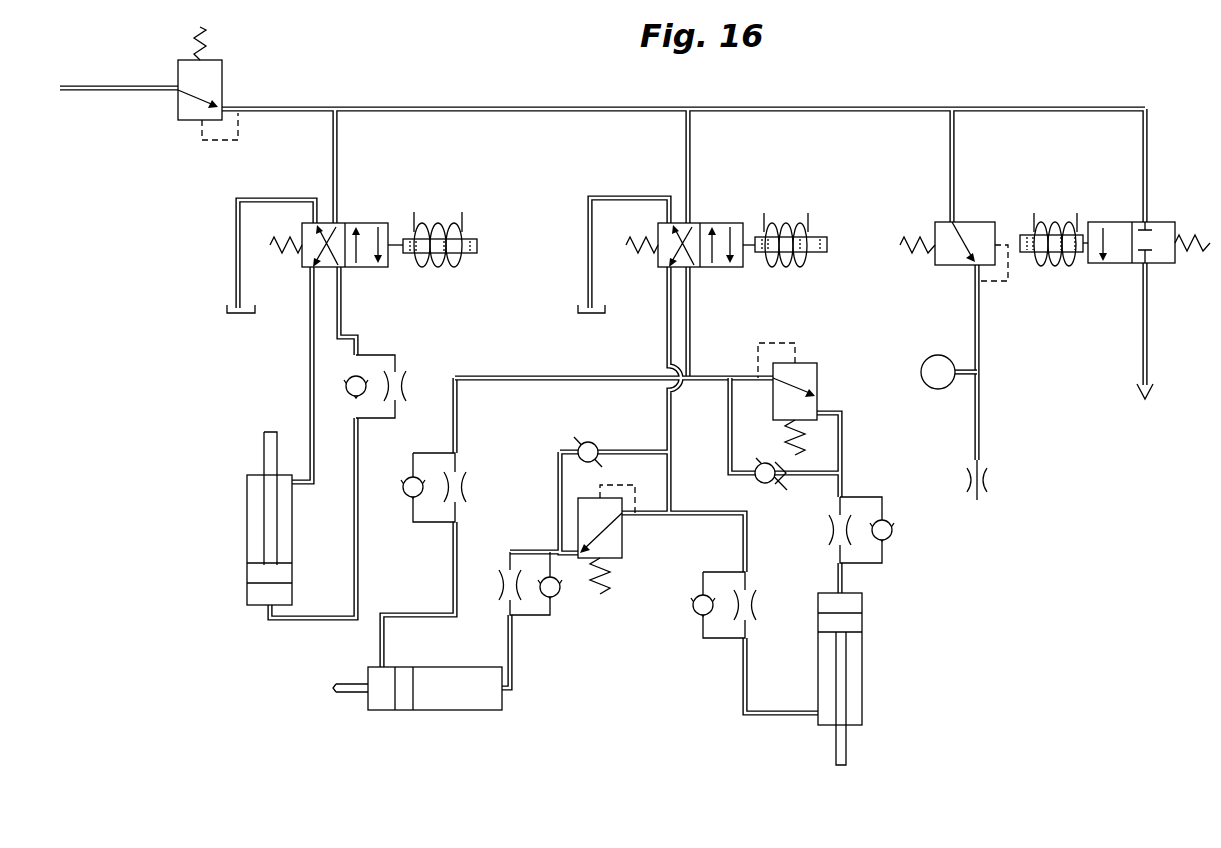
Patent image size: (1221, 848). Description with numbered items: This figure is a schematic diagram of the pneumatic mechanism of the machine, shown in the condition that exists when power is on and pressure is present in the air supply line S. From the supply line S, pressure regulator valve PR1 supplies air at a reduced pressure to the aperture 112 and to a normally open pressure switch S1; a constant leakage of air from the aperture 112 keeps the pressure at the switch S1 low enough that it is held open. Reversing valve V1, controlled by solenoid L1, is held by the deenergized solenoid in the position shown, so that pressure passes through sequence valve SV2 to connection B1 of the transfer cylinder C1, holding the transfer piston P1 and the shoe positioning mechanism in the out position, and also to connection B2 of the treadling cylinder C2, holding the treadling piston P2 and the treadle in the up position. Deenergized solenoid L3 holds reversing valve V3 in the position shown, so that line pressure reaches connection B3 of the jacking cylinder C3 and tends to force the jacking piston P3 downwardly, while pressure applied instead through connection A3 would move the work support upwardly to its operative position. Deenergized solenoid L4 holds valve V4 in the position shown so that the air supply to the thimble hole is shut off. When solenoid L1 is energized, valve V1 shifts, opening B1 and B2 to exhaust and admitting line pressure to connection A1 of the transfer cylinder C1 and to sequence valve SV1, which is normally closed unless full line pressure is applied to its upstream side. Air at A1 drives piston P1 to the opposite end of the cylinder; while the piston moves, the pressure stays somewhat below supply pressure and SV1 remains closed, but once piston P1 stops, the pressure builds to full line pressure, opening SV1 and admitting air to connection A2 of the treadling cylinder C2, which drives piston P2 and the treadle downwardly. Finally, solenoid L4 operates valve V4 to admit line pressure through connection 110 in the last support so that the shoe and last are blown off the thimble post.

The air supply line S is at (119, 76).
The reversing valve V3 is at (307, 254).
The solenoid L3 is at (432, 253).
The reversing valve V1 is at (660, 254).
The solenoid L1 is at (785, 253).
The pressure regulator valve PR1 is at (954, 238).
The solenoid L4 is at (1054, 230).
The valve V4 is at (1149, 228).
The pressure switch S1 is at (949, 372).
The connection 110 is at (1150, 346).
The aperture 112 is at (982, 399).
The sequence valve SV1 is at (810, 399).
The sequence valve SV2 is at (622, 539).
The connection B3 is at (308, 388).
The jacking cylinder C3 is at (246, 518).
The jacking piston P3 is at (269, 573).
The connection A3 is at (295, 450).
The connection A1 is at (401, 522).
The transfer cylinder C1 is at (417, 698).
The transfer piston P1 is at (413, 688).
The connection B1 is at (517, 665).
The connection A2 is at (858, 581).
The treadling cylinder C2 is at (868, 679).
The treadling piston P2 is at (840, 623).
The connection B2 is at (781, 676).